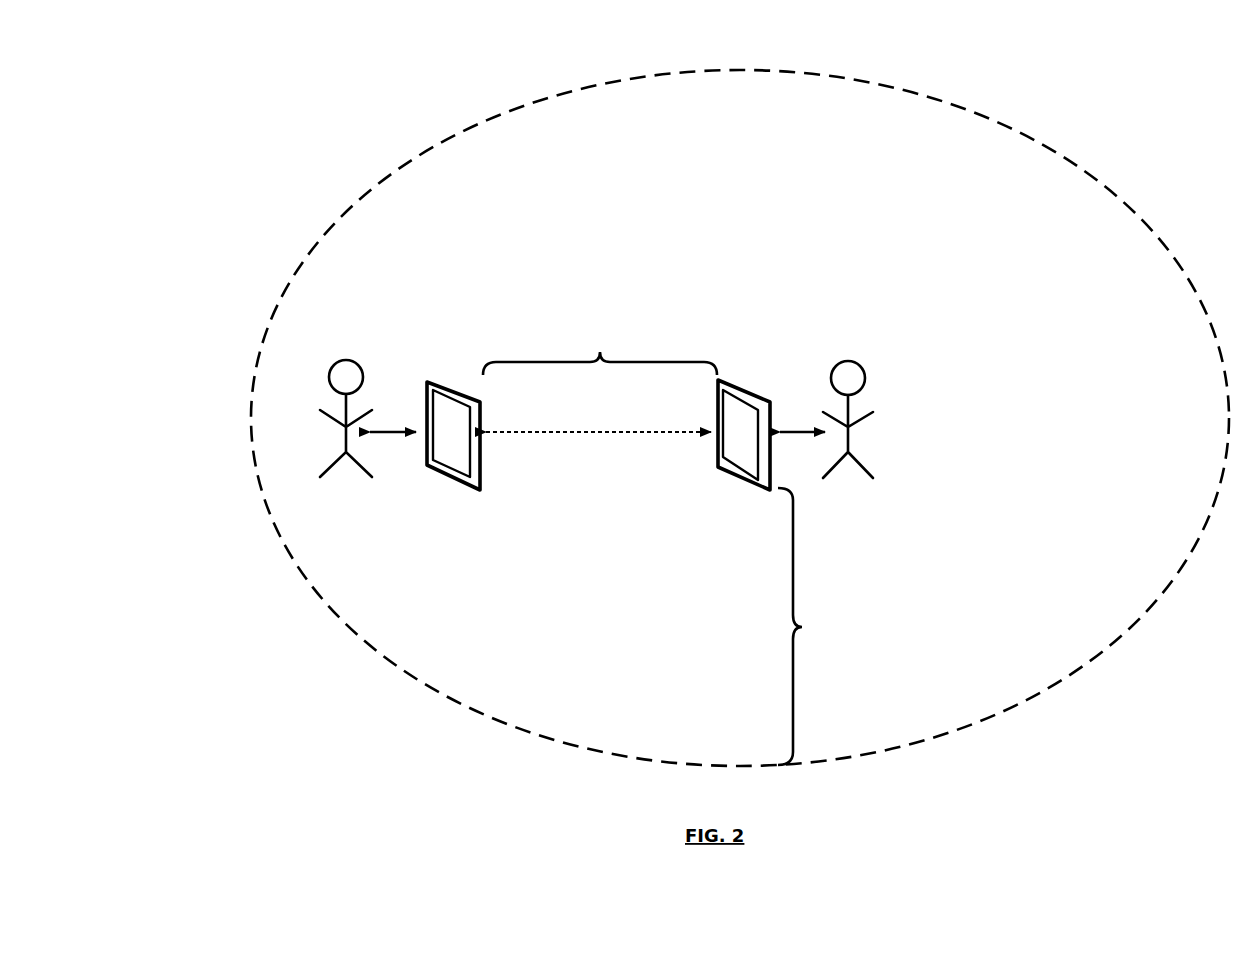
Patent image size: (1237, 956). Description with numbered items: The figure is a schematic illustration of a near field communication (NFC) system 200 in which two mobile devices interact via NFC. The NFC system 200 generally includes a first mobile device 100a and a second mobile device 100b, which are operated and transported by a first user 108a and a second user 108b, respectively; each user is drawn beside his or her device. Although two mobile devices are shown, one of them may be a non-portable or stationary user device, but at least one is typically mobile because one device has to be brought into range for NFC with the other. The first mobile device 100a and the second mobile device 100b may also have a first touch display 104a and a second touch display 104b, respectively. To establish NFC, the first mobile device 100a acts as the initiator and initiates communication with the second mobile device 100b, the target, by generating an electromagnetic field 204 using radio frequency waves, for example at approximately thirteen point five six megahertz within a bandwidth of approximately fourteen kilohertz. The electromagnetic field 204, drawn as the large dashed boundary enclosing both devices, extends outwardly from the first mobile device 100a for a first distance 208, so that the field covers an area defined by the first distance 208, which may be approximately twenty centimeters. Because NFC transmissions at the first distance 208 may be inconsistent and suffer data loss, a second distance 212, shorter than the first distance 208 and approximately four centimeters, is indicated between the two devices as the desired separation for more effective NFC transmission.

The near field communication (NFC) system 200 is at (281, 68).
The electromagnetic field 204 is at (750, 70).
The first distance 208 is at (812, 626).
The second distance 212 is at (600, 379).
The first mobile device 100a is at (750, 388).
The second mobile device 100b is at (455, 383).
The first touch display 104a is at (735, 450).
The second touch display 104b is at (460, 455).
The first user 108a is at (869, 341).
The second user 108b is at (366, 505).